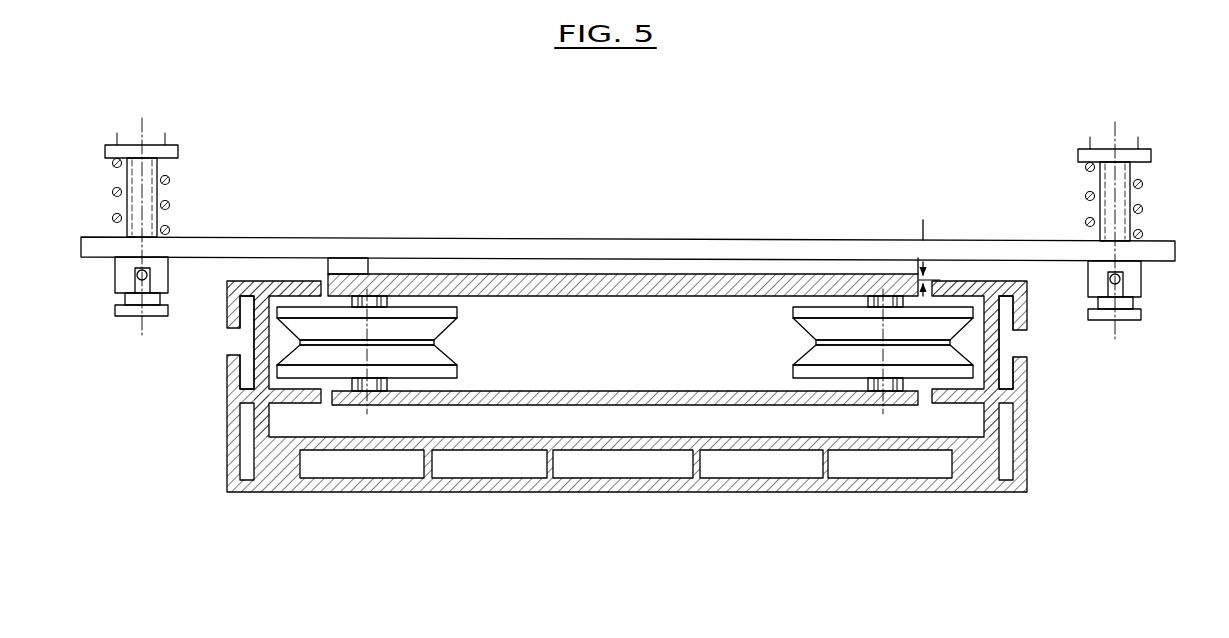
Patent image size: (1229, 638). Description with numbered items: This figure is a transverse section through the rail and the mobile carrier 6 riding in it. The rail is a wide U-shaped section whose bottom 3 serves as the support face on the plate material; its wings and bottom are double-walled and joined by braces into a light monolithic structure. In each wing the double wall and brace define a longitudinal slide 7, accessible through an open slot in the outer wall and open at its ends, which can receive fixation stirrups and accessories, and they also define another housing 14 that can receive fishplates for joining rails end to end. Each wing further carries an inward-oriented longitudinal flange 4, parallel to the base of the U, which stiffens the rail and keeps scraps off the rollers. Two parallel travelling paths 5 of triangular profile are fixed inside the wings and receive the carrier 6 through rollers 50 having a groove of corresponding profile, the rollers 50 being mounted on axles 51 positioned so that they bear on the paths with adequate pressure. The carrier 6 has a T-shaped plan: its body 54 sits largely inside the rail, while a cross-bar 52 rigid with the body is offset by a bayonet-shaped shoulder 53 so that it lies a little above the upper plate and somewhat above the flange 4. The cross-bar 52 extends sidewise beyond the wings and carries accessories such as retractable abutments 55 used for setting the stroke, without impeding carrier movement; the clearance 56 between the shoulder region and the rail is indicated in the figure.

The bottom 3 is at (303, 462).
The flange 4 is at (260, 279).
The travelling path 5 is at (973, 345).
The mobile carrier 6 is at (803, 407).
The longitudinal slide 7 is at (233, 340).
The housing 14 is at (245, 442).
The roller 50 is at (455, 340).
The axle 51 is at (368, 408).
The cross-bar 52 is at (1175, 252).
The bayonet-shaped shoulder 53 is at (905, 265).
The body 54 is at (337, 293).
The retractable abutment 55 is at (130, 143).
The clearance gap 56 is at (925, 232).